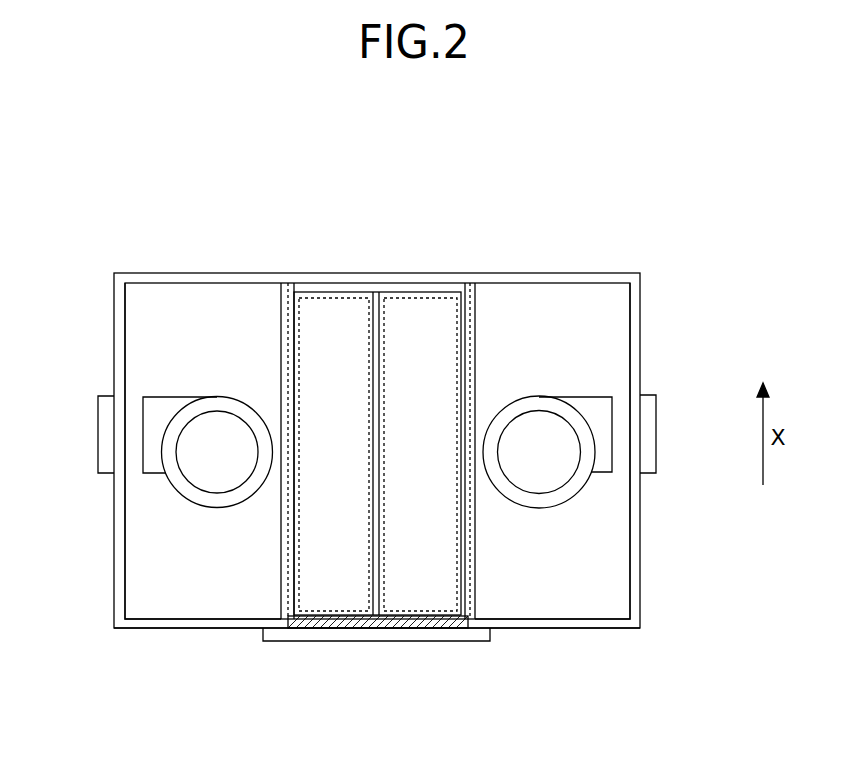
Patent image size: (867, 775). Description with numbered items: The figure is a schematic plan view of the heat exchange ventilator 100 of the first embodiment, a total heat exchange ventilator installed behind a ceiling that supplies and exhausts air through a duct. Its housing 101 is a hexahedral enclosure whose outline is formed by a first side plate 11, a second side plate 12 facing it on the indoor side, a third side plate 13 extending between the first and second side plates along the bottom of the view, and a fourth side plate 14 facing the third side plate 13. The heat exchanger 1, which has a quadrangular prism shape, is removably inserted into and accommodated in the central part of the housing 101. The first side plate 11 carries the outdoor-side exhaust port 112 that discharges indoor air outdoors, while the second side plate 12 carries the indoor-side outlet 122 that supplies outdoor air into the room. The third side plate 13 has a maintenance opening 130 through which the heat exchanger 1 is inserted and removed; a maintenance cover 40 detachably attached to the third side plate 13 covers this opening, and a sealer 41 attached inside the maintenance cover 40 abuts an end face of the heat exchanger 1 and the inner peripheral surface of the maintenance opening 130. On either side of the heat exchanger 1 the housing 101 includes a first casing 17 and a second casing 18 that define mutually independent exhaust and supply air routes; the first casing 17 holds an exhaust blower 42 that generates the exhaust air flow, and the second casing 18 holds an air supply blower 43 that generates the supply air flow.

The heat exchange ventilator 100 is at (643, 182).
The housing 101 is at (625, 273).
The heat exchanger 1 is at (418, 327).
The first side plate 11 is at (115, 542).
The second side plate 12 is at (637, 545).
The third side plate 13 is at (570, 623).
The fourth side plate 14 is at (343, 292).
The first casing 17 is at (225, 327).
The second casing 18 is at (525, 327).
The maintenance cover 40 is at (405, 641).
The sealer 41 is at (357, 629).
The exhaust blower 42 is at (168, 397).
The air supply blower 43 is at (586, 397).
The outdoor-side exhaust port 112 is at (98, 436).
The indoor-side outlet 122 is at (657, 438).
The maintenance opening 130 is at (293, 625).